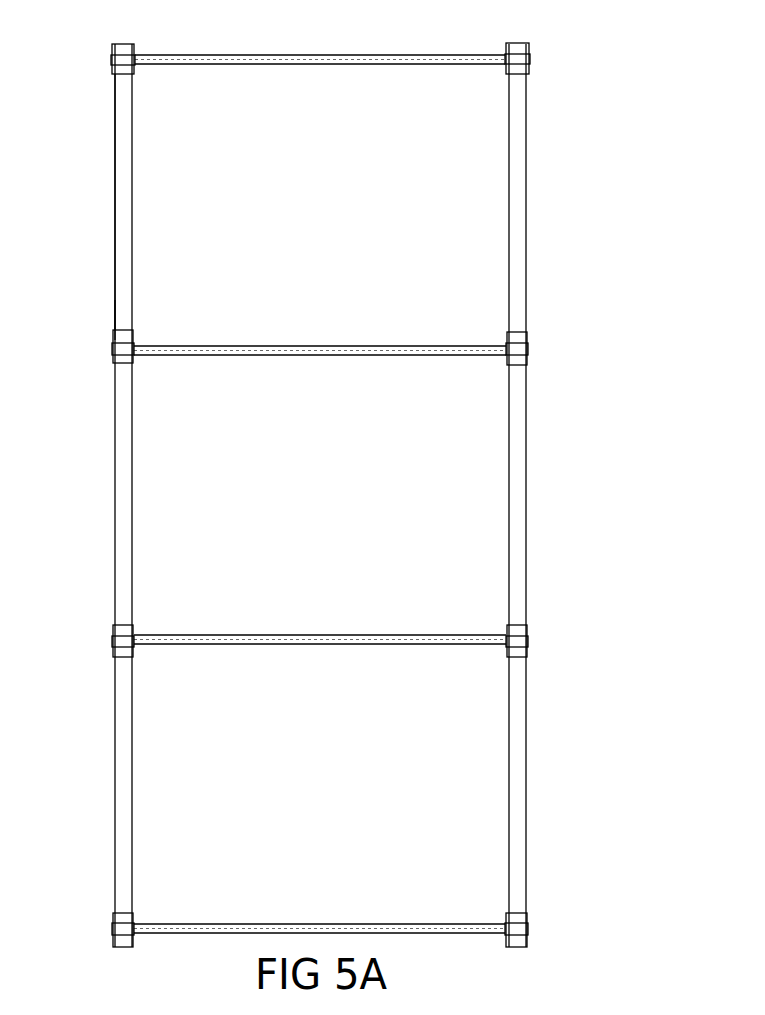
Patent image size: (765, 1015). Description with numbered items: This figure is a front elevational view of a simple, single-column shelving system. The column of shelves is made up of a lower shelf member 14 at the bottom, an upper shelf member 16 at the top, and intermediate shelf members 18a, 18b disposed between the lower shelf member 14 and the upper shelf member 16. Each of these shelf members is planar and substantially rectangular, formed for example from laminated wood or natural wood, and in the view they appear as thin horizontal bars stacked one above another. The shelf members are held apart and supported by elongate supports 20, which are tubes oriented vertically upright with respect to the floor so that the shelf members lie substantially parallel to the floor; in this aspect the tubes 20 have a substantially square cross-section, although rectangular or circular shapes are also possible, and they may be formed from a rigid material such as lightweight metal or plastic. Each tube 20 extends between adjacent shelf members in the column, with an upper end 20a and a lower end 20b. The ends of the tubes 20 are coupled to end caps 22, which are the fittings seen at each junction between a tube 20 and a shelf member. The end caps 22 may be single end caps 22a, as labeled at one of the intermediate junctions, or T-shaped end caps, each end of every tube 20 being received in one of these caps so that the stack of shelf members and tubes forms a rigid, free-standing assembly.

The lower shelf member 14 is at (432, 929).
The upper shelf member 16 is at (320, 58).
The intermediate shelf member 18a is at (322, 348).
The intermediate shelf member 18b is at (321, 638).
The elongate support 20 is at (120, 244).
The upper end 20a is at (120, 88).
The lower end 20b is at (120, 325).
The end cap 22 is at (550, 348).
The single end cap 22a is at (528, 352).